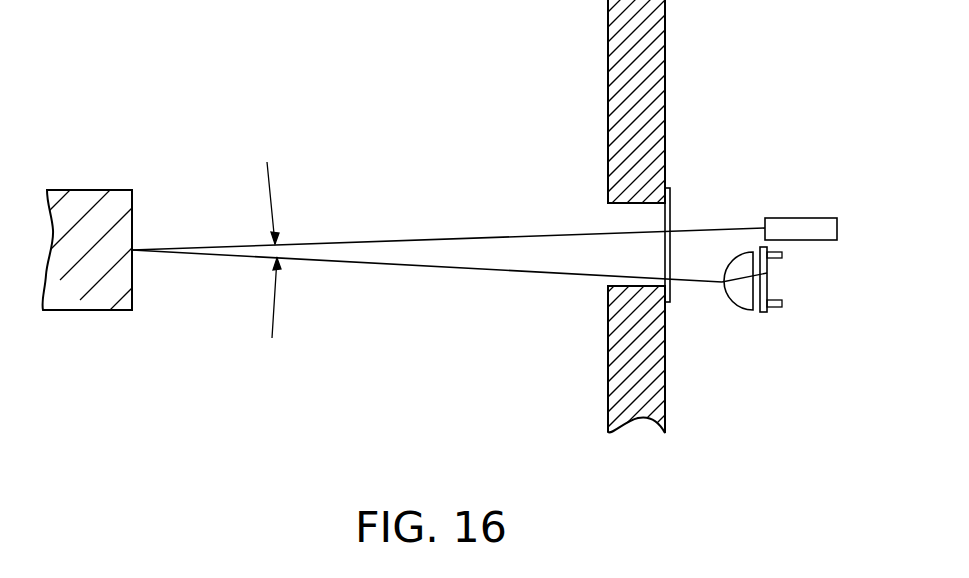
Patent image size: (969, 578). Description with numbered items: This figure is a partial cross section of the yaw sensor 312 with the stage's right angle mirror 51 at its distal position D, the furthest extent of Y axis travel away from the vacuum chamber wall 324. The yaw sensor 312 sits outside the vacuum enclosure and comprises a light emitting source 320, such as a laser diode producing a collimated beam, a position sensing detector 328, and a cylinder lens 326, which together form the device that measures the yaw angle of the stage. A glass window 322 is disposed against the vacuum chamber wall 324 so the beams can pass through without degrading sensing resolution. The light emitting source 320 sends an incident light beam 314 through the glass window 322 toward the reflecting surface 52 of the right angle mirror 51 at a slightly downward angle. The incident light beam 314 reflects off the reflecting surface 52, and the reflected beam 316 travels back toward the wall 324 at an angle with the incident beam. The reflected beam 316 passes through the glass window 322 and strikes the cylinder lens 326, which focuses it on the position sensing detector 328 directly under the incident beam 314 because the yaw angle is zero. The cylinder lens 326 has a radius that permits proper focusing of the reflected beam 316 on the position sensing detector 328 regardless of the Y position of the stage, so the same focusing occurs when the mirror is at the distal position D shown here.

The right angle mirror 51 is at (80, 292).
The reflecting surface 52 is at (132, 190).
The distal position D is at (103, 297).
The yaw sensor 312 is at (550, 386).
The incident light beam 314 is at (418, 238).
The reflected beam 316 is at (397, 268).
The light emitting source 320 is at (812, 218).
The glass window 322 is at (670, 302).
The vacuum chamber wall 324 is at (648, 422).
The cylinder lens 326 is at (747, 310).
The position sensing detector 328 is at (767, 273).